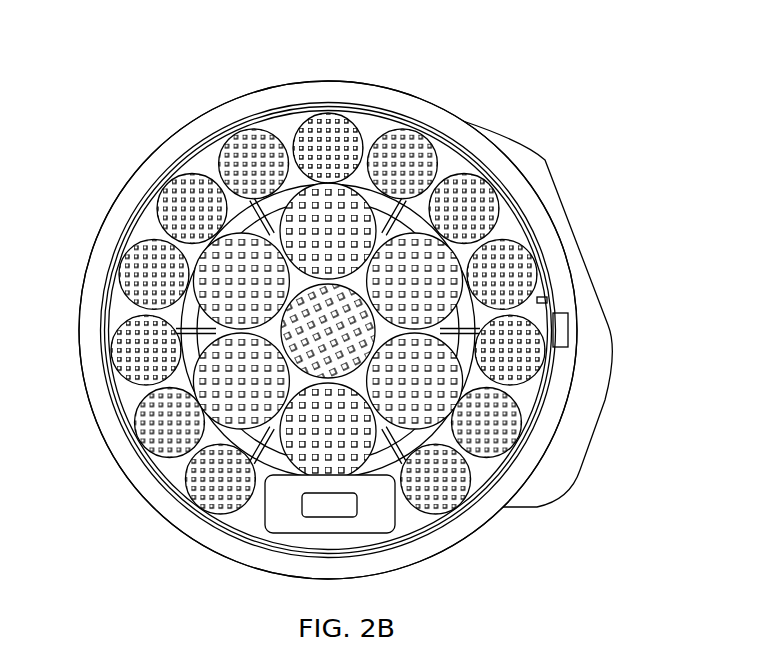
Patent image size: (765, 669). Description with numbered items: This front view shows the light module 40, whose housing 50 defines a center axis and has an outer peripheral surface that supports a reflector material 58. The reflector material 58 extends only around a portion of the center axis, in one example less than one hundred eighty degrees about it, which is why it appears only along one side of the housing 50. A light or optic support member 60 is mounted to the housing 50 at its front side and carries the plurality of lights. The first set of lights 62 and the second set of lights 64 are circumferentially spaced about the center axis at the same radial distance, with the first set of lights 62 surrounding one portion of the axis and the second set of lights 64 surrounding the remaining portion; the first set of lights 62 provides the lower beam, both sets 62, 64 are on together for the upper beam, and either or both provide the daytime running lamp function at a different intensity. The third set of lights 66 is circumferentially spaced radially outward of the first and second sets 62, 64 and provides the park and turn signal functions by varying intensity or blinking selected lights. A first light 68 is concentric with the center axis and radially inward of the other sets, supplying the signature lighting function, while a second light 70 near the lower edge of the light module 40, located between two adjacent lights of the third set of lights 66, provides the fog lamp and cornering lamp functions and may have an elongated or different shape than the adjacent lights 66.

The light module 40 is at (160, 40).
The housing 50 is at (446, 110).
The reflector material 58 is at (553, 493).
The optic support member 60 is at (520, 426).
The first set of lights 62 is at (334, 185).
The second set of lights 64 is at (562, 283).
The third set of lights 66 is at (252, 130).
The first light 68 is at (518, 245).
The second light 70 is at (393, 522).